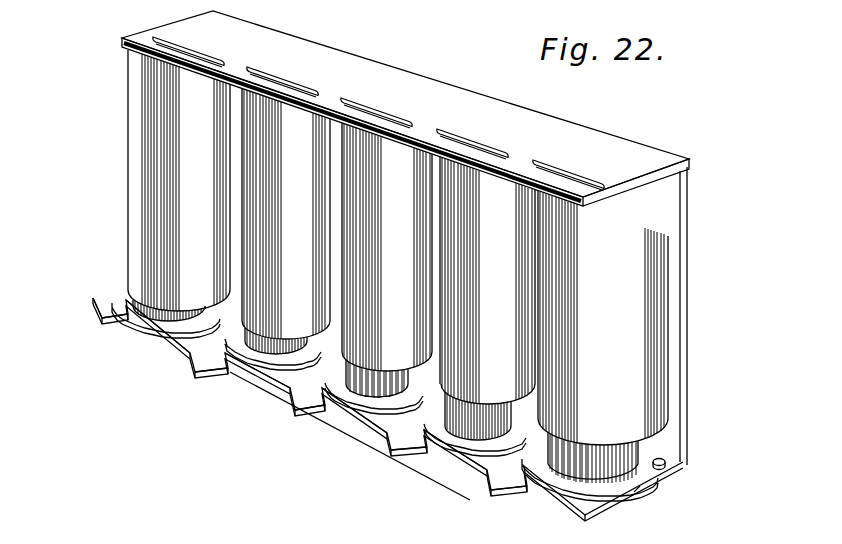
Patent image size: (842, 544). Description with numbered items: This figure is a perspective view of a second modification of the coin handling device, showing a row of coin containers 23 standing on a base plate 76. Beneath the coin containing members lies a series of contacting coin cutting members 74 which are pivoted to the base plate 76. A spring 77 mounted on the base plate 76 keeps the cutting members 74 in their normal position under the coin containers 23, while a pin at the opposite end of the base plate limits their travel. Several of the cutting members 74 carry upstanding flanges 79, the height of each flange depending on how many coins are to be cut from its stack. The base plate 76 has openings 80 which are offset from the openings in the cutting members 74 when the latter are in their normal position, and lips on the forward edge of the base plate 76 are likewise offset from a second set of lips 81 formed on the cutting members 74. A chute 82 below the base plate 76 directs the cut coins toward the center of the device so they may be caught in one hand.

The cell container 23 is at (123, 160).
The base plate 74 is at (328, 360).
The base lug 76 is at (641, 489).
The fastener 77 is at (661, 468).
The boss 79 is at (193, 312).
The tab 80 is at (115, 321).
The notch 81 is at (94, 301).
The front edge 82 is at (418, 473).